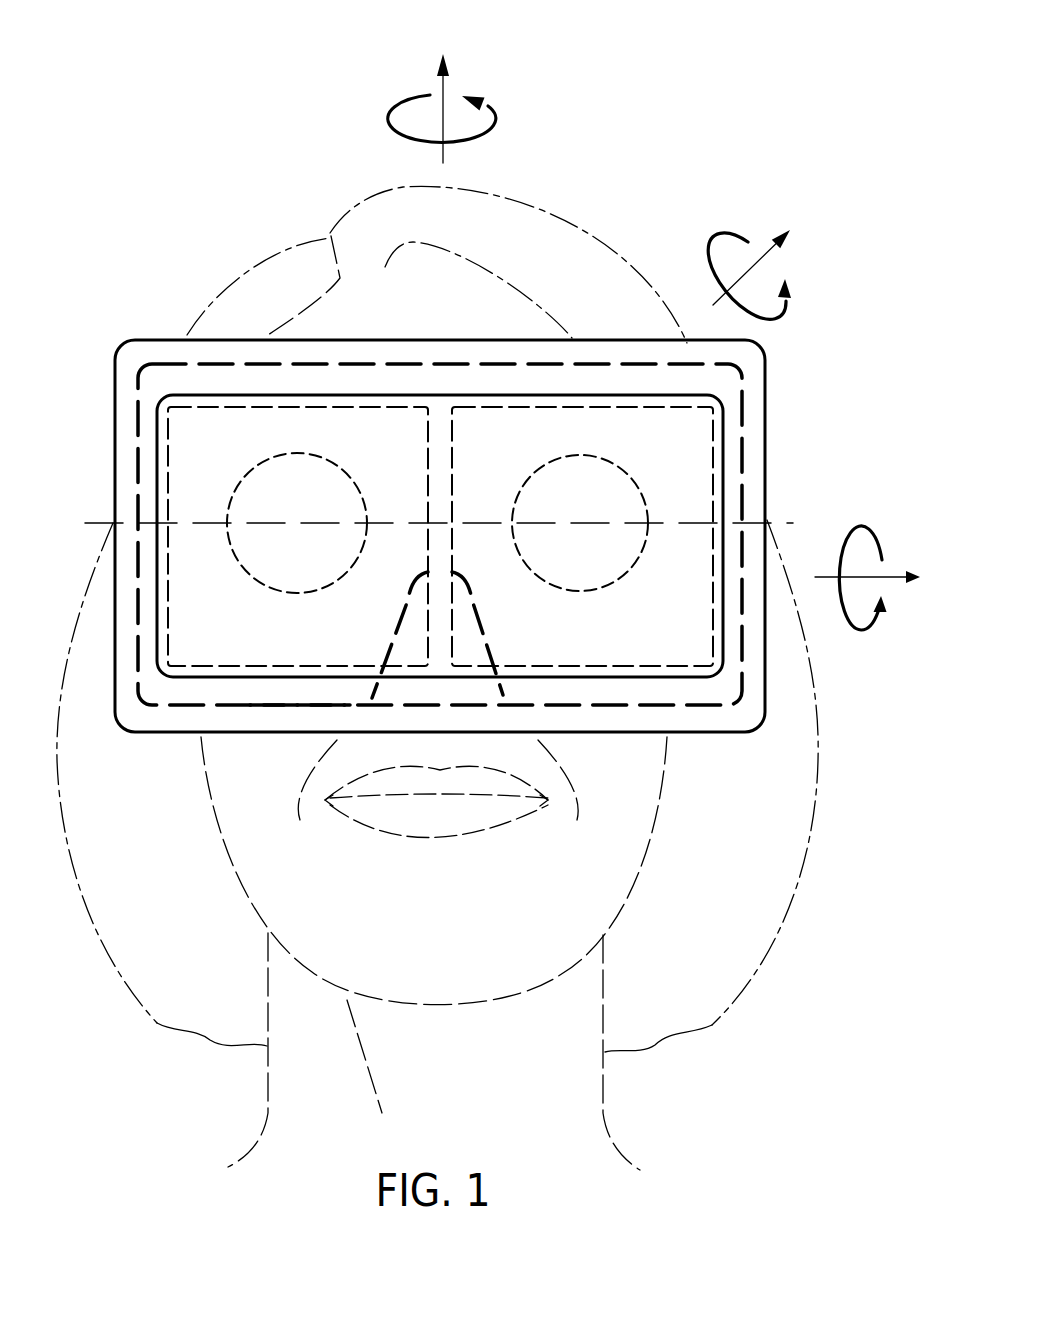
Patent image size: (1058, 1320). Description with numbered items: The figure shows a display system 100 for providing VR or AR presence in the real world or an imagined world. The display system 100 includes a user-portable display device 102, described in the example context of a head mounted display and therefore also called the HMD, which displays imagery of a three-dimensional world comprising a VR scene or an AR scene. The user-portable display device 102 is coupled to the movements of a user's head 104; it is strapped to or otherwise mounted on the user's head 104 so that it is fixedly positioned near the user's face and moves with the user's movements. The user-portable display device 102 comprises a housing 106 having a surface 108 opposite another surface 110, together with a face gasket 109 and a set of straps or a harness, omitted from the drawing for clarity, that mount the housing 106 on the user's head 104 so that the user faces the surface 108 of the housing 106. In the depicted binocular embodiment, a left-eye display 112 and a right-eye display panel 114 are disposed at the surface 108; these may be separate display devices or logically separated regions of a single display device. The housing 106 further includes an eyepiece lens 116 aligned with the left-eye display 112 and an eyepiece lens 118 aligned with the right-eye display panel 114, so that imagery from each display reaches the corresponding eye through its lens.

The display system 100 is at (694, 106).
The user-portable display device 102 is at (116, 337).
The user's head 104 is at (220, 856).
The housing 106 is at (766, 447).
The surface 108 is at (190, 719).
The face gasket 109 is at (297, 708).
The surface 110 is at (779, 690).
The left-eye display 112 is at (237, 452).
The right-eye display panel 114 is at (522, 452).
The eyepiece lens 116 is at (345, 470).
The eyepiece lens 118 is at (627, 472).